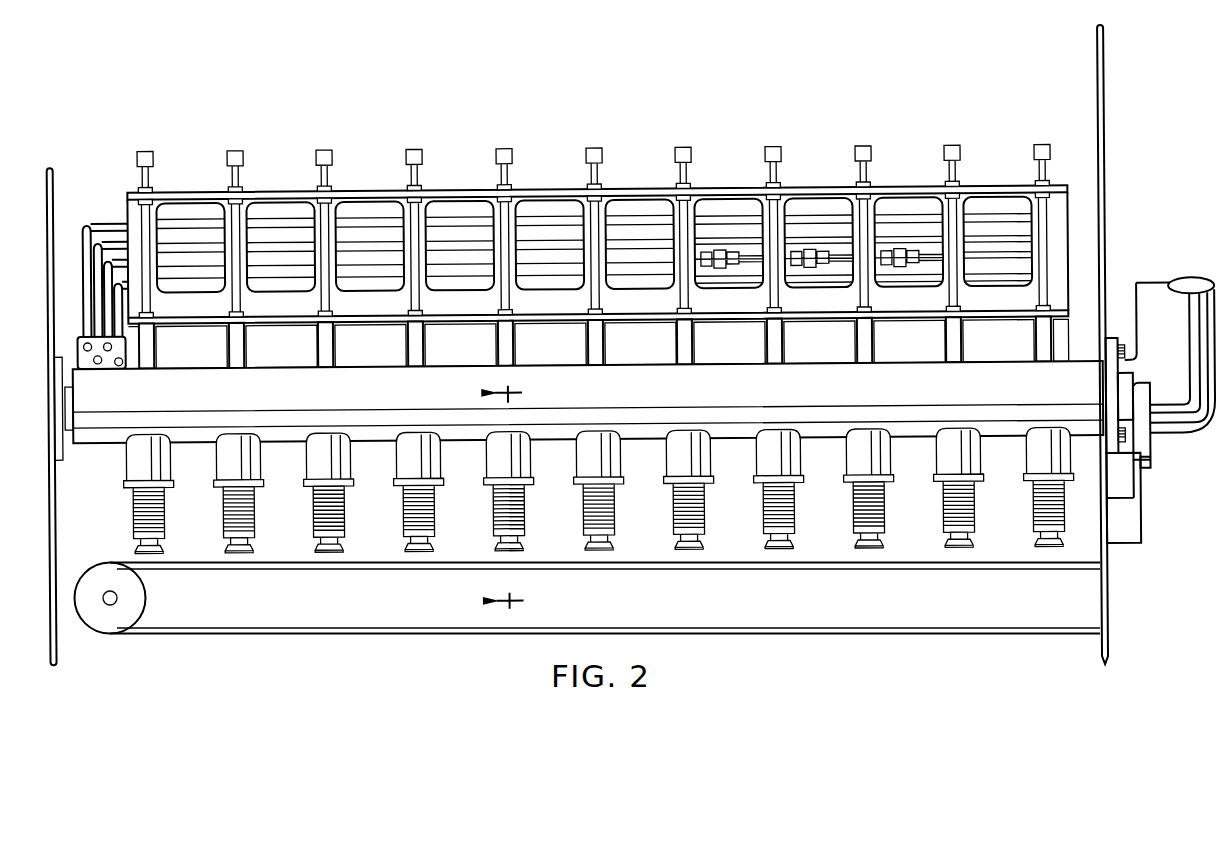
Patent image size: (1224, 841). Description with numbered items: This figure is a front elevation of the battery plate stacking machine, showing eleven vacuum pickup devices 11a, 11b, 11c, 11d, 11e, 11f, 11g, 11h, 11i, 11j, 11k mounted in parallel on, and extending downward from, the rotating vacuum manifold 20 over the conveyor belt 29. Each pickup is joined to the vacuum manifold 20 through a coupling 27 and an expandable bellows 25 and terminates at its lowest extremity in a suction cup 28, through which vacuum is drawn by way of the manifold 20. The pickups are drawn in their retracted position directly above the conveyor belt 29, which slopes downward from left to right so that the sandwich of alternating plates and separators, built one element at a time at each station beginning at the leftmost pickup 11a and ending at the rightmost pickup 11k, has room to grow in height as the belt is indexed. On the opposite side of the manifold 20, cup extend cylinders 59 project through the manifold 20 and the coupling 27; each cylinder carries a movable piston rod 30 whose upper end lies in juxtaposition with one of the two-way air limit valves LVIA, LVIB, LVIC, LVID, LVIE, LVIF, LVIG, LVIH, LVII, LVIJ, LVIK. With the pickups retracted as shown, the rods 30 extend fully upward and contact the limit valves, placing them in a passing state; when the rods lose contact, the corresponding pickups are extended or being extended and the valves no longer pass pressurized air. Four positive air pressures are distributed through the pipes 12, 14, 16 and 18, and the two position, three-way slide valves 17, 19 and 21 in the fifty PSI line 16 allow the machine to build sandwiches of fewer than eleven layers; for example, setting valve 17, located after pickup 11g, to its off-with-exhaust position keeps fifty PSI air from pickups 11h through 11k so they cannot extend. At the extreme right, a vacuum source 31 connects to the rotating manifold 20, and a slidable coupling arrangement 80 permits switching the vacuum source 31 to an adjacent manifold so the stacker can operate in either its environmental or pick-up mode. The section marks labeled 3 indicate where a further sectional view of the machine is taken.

The section line 3- 3 is at (510, 496).
The vacuum pickup device 11a is at (142, 494).
The vacuum pickup device 11b is at (241, 493).
The vacuum pickup device 11c is at (350, 462).
The vacuum pickup device 11d is at (440, 462).
The vacuum pickup device 11e is at (530, 462).
The vacuum pickup device 11f is at (620, 462).
The vacuum pickup device 11g is at (710, 462).
The vacuum pickup device 11h is at (800, 462).
The vacuum pickup device 11i is at (890, 462).
The vacuum pickup device 11j is at (980, 462).
The vacuum pickup device 11k is at (1070, 460).
The pipe 12 is at (980, 214).
The pipe 14 is at (998, 237).
The pipe 16 is at (986, 268).
The two position, three-way slide valve 17 is at (729, 269).
The pipe 18 is at (1016, 286).
The two position, three-way slide valve 19 is at (820, 269).
The rotating vacuum manifold 20 is at (1063, 377).
The two position, three-way slide valve 21 is at (912, 269).
The expandable bellows 25 is at (255, 525).
The coupling 27 is at (128, 442).
The suction cup 28 is at (232, 549).
The conveyor belt 29 is at (915, 636).
The piston rod 30 is at (248, 300).
The vacuum source 31 is at (1197, 283).
The cup extend cylinder 59 is at (249, 354).
The slidable coupling arrangement 80 is at (1150, 463).
The two-way air limit valve LVIA is at (139, 148).
The two-way air limit valve LVIB is at (229, 148).
The two-way air limit valve LVIC is at (318, 148).
The two-way air limit valve LVID is at (408, 148).
The two-way air limit valve LVIE is at (498, 148).
The two-way air limit valve LVIF is at (588, 148).
The two-way air limit valve LVIG is at (677, 148).
The two-way air limit valve LVIH is at (767, 148).
The two-way air limit valve LVII is at (857, 148).
The two-way air limit valve LVIJ is at (946, 148).
The two-way air limit valve LVIK is at (1036, 148).